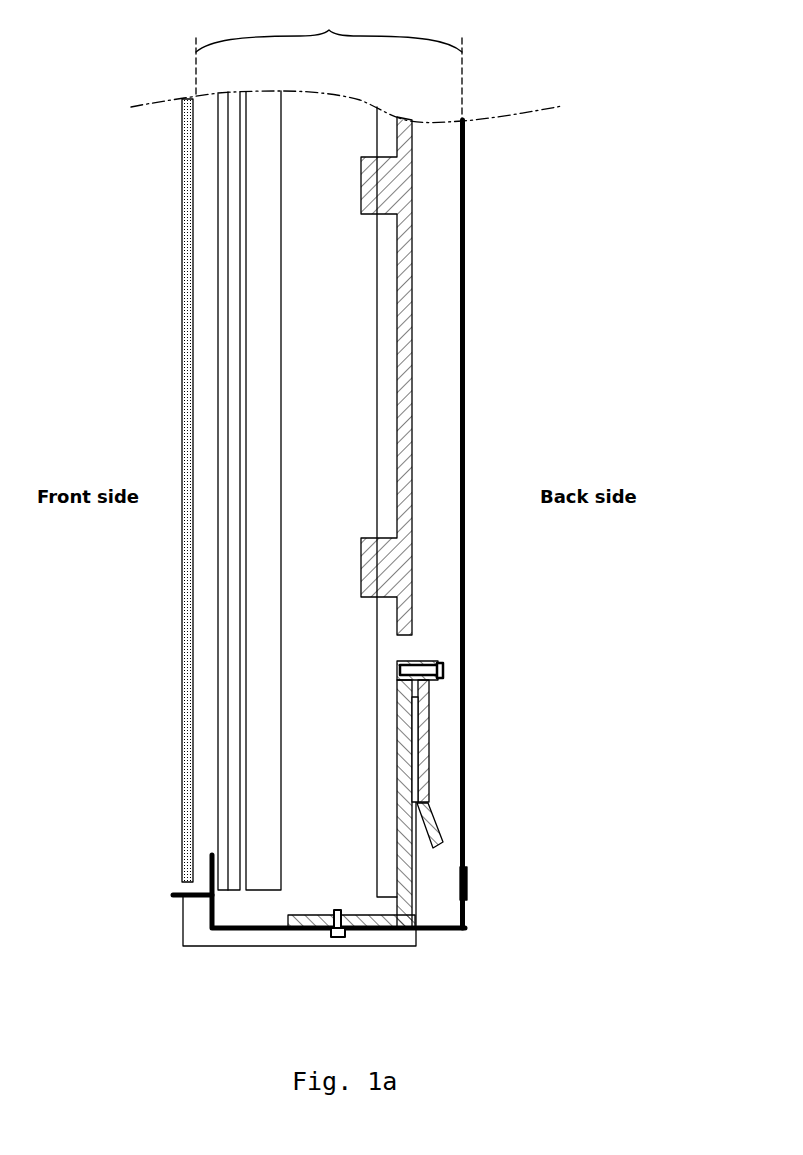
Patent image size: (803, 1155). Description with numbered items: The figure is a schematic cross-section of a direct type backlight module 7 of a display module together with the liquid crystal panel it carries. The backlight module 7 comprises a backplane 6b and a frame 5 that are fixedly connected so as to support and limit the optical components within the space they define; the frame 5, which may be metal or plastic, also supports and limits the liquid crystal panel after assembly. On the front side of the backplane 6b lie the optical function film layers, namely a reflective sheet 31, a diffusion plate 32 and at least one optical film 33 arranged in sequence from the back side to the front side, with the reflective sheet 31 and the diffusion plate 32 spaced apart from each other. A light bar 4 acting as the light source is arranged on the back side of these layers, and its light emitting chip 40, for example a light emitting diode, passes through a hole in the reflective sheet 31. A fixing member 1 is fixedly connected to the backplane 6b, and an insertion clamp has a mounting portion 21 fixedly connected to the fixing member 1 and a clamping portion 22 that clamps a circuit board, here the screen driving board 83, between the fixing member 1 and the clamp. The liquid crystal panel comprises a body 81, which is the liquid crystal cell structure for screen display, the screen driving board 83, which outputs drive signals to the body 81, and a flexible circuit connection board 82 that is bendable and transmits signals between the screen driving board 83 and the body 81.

The fixing member 1 is at (407, 660).
The light bar 4 is at (412, 238).
The frame 5 is at (238, 930).
The backplane 6b is at (466, 345).
The backlight module 7 is at (329, 64).
The mounting portion 21 is at (435, 662).
The clamping portion 22 is at (428, 745).
The reflective sheet 31 is at (382, 279).
The diffusion plate 32 is at (262, 178).
The optical film 33 is at (233, 229).
The light emitting chip 40 is at (361, 538).
The body 81 is at (182, 368).
The flexible circuit connection board 82 is at (297, 947).
The screen driving board 83 is at (428, 783).